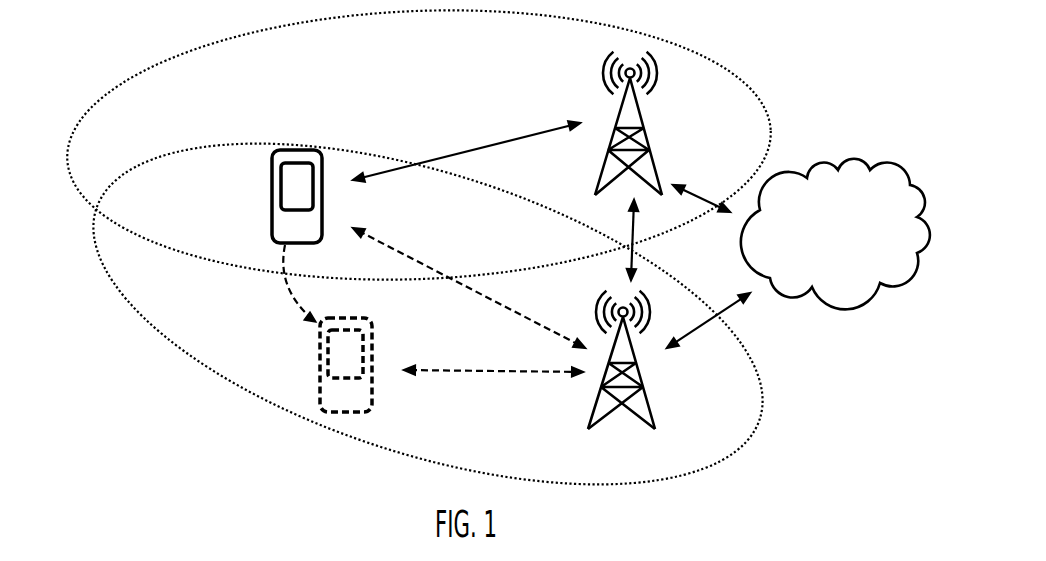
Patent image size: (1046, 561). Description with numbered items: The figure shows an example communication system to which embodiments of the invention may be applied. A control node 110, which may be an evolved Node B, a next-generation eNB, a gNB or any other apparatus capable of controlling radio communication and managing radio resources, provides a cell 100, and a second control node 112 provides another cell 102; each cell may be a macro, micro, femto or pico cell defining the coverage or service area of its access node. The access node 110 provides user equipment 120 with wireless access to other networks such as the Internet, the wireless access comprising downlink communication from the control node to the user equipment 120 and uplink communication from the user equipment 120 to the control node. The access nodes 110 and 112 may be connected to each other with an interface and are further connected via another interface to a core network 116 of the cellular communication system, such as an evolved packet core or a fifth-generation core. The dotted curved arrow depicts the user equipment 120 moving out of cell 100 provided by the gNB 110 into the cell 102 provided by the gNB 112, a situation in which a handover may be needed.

The cell 100 is at (757, 92).
The cell 102 is at (714, 467).
The control node 110 is at (652, 154).
The control node 112 is at (648, 408).
The core network 116 is at (835, 234).
The user equipment 120 is at (276, 152).